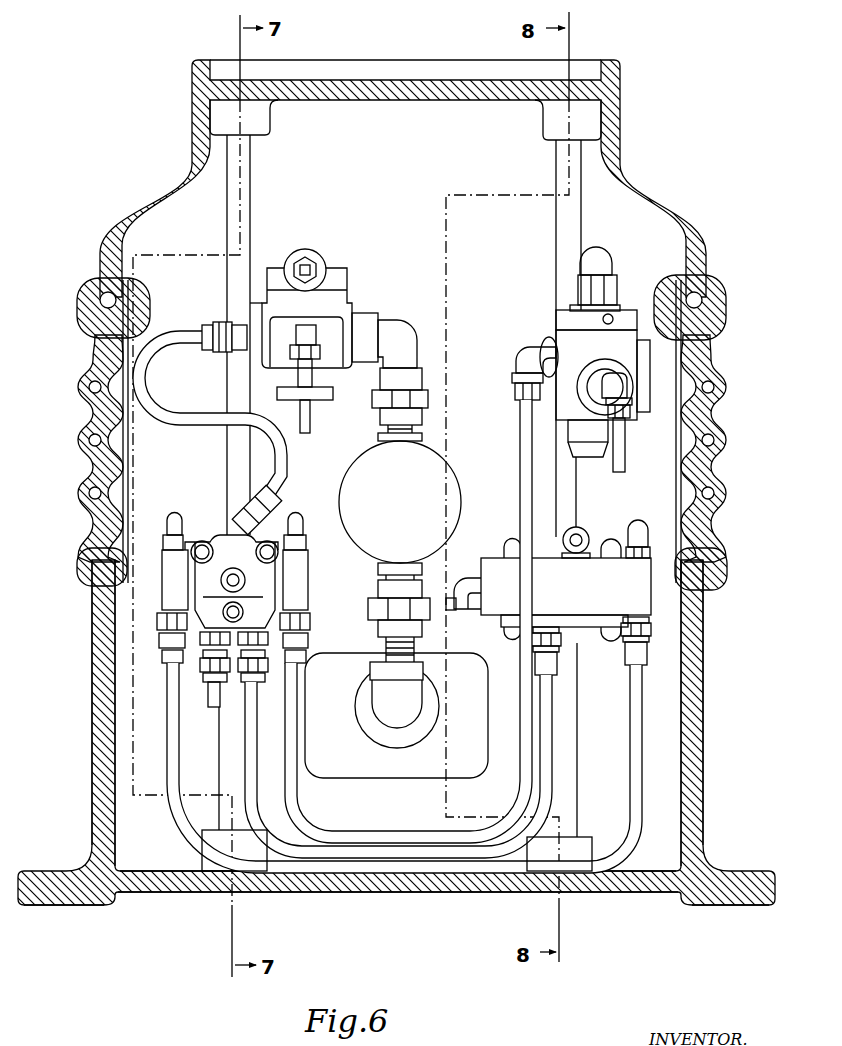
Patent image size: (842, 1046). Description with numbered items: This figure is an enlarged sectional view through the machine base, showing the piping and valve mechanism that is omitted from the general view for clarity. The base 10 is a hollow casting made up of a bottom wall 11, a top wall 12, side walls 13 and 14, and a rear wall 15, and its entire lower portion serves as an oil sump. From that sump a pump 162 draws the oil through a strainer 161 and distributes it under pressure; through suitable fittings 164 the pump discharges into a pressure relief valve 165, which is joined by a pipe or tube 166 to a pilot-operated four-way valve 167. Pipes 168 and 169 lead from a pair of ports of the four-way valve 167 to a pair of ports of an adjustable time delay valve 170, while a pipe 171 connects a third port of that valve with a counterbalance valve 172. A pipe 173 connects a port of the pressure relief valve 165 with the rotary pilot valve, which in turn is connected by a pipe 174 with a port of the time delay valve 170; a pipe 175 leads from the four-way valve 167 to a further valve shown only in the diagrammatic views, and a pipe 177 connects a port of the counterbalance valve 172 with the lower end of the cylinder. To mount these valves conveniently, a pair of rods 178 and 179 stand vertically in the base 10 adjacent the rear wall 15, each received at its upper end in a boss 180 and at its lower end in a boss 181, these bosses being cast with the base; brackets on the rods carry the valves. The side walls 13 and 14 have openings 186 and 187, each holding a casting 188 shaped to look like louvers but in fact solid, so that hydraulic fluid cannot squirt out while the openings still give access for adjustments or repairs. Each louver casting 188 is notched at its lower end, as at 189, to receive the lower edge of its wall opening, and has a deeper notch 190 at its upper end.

The base 10 is at (712, 806).
The bottom wall 11 is at (413, 893).
The top wall 12 is at (424, 80).
The side wall 13 is at (94, 700).
The side wall 14 is at (701, 720).
The rear wall 15 is at (399, 172).
The strainer 161 is at (414, 770).
The pump 162 is at (361, 540).
The fittings 164 is at (414, 377).
The pressure relief valve 165 is at (357, 286).
The pipe or tube 166 is at (181, 323).
The four-way valve 167 is at (200, 522).
The pipe 168 is at (182, 829).
The pipe 169 is at (250, 725).
The adjustable time delay valve 170 is at (646, 512).
The pipe 171 is at (520, 443).
The counterbalance valve 172 is at (551, 331).
The pipe 173 is at (311, 420).
The pipe 174 is at (580, 527).
The pipe 175 is at (218, 709).
The pipe 177 is at (626, 460).
The rod 178 is at (251, 182).
The rod 179 is at (564, 235).
The boss 180 is at (264, 121).
The boss 181 is at (201, 866).
The opening 186 is at (98, 300).
The opening 187 is at (716, 308).
The casting 188 is at (83, 373).
The notch 189 is at (79, 558).
The deeper notch 190 is at (94, 320).